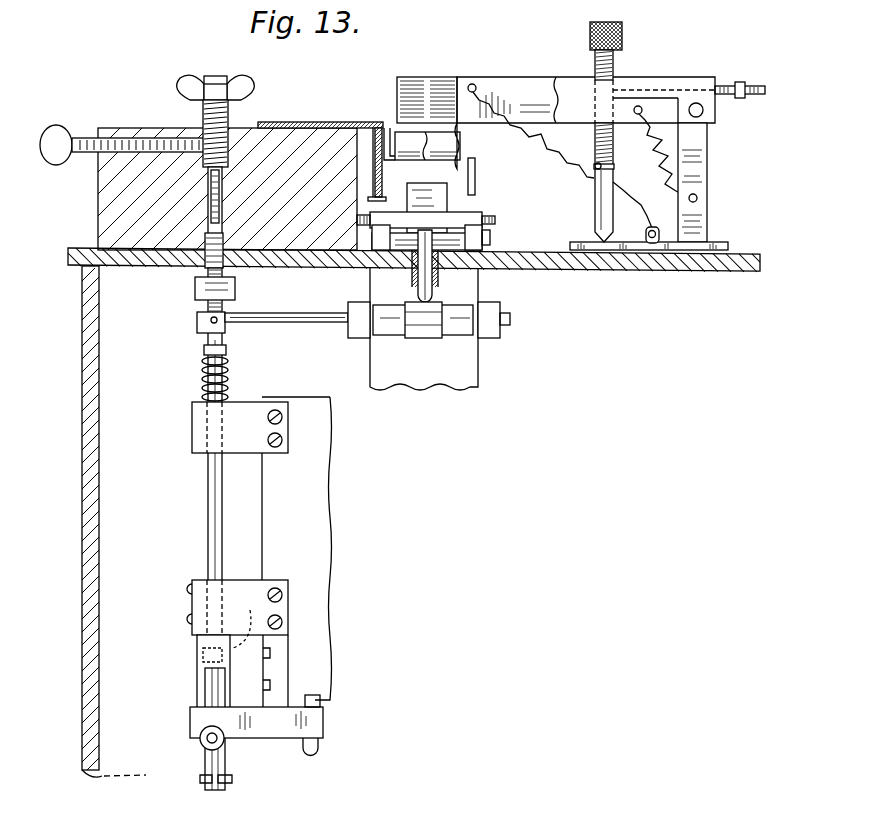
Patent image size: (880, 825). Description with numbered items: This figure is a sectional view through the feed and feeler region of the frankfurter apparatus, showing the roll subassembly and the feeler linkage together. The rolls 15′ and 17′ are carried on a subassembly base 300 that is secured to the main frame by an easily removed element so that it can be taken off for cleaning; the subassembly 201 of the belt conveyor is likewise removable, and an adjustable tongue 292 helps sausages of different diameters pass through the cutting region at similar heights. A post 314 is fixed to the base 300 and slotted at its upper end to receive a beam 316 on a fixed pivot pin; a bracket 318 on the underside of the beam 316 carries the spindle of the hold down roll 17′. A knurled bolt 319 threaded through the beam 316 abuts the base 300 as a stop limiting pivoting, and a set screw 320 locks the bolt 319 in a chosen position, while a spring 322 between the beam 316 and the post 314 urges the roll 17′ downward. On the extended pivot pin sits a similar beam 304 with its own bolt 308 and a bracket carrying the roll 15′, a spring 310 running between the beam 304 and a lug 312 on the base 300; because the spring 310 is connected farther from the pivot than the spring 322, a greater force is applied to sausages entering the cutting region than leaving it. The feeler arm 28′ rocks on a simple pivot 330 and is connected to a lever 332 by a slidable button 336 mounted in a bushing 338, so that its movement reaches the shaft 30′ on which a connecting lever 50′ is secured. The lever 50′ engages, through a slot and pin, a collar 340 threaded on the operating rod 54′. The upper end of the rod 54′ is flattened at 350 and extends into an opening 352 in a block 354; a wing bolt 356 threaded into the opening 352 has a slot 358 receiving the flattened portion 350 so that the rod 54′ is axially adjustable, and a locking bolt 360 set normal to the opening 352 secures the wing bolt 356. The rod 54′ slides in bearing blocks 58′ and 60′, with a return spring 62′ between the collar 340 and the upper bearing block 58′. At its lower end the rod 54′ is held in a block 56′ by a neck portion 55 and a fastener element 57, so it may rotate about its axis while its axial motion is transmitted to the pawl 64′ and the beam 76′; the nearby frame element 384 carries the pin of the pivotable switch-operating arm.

The subassembly base 300 is at (656, 246).
The block 354 is at (283, 147).
The bracket 318 is at (390, 128).
The hold down roll 17′ is at (382, 158).
The locking bolt 360 is at (78, 138).
The wing bolt 356 is at (198, 92).
The flattened portion 350 is at (213, 200).
The slot 358 is at (208, 173).
The opening 352 is at (207, 231).
The operating rod 54′ is at (207, 268).
The collar 340 is at (195, 290).
The connecting lever 50′ is at (208, 332).
The shaft 30′ is at (288, 318).
The return spring 62′ is at (203, 372).
The upper bearing block 58′ is at (195, 423).
The bearing block 60′ is at (210, 598).
The neck portion 55 is at (246, 615).
The block 56′ is at (213, 647).
The fastener element 57 is at (200, 662).
The pawl 64′ is at (212, 690).
The beam 76′ is at (323, 725).
The feeler arm 28′ is at (412, 198).
The subassembly 201 is at (482, 222).
The adjustable tongue 292 is at (450, 217).
The pivot 330 is at (400, 242).
The bushing 338 is at (410, 275).
The slidable button 336 is at (430, 294).
The roll 15′ is at (452, 147).
The beam 316 is at (450, 85).
The beam 304 is at (525, 88).
The spring 322 is at (671, 147).
The post 314 is at (695, 173).
The lug 312 is at (648, 244).
The set screw 320 is at (739, 84).
The bolt 308 is at (605, 203).
The bolt 319 is at (613, 148).
The spring 310 is at (549, 168).
The frame element 384 is at (453, 383).
The lever 332 is at (428, 308).